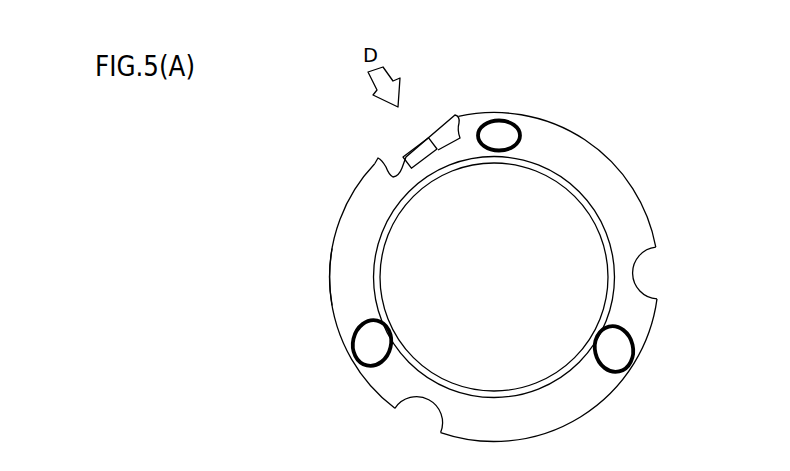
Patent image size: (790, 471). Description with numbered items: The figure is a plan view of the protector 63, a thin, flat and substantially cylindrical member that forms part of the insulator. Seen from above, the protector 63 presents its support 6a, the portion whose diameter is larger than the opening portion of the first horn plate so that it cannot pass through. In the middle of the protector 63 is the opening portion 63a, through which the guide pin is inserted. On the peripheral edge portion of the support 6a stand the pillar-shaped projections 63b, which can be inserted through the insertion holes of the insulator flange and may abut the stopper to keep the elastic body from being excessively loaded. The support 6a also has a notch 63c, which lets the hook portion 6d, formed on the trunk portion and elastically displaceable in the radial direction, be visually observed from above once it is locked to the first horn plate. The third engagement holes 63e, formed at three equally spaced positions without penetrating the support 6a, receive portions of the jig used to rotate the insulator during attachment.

The protector 63 is at (684, 146).
The opening portion 63a is at (514, 284).
The pillar-shaped projections 63b is at (656, 267).
The notch 63c is at (386, 165).
The third engagement holes 63e is at (500, 127).
The support 6a is at (338, 273).
The hook portion 6d is at (430, 137).